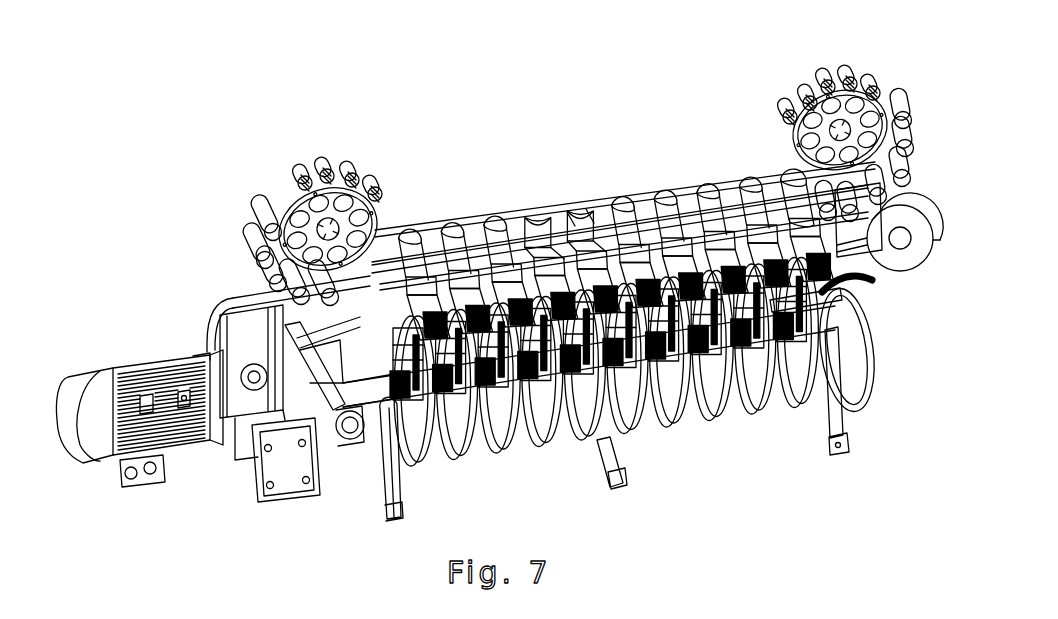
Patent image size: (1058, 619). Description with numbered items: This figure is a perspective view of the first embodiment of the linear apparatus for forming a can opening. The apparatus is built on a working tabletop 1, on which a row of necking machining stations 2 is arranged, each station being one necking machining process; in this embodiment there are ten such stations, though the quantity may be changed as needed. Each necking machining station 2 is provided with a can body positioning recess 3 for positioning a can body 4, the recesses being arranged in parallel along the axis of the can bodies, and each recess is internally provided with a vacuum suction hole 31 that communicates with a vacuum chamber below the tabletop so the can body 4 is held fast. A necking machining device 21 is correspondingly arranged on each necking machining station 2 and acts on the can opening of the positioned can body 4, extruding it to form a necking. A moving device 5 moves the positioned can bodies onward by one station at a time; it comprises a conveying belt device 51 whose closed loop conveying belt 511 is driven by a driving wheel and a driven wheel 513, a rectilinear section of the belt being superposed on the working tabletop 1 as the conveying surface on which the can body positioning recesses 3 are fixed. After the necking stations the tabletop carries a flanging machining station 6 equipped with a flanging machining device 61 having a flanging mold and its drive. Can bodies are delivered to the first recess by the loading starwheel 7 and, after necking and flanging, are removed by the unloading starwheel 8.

The working tabletop 1 is at (610, 280).
The necking machining station 2 is at (408, 236).
The necking machining device 21 is at (492, 224).
The can body positioning recess 3 is at (569, 176).
The vacuum suction hole 31 is at (581, 230).
The can body 4 is at (666, 202).
The moving device 5 is at (469, 341).
The conveying belt device 51 is at (226, 300).
The closed loop conveying belt 511 is at (696, 230).
The driven wheel 513 is at (903, 252).
The flanging machining station 6 is at (807, 253).
The flanging machining device 61 is at (784, 205).
The loading starwheel 7 is at (310, 175).
The unloading starwheel 8 is at (826, 85).